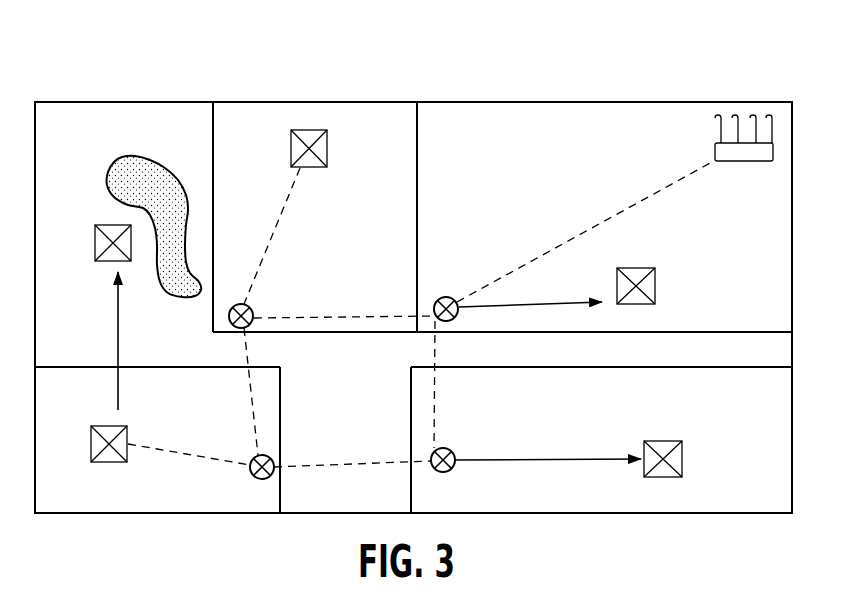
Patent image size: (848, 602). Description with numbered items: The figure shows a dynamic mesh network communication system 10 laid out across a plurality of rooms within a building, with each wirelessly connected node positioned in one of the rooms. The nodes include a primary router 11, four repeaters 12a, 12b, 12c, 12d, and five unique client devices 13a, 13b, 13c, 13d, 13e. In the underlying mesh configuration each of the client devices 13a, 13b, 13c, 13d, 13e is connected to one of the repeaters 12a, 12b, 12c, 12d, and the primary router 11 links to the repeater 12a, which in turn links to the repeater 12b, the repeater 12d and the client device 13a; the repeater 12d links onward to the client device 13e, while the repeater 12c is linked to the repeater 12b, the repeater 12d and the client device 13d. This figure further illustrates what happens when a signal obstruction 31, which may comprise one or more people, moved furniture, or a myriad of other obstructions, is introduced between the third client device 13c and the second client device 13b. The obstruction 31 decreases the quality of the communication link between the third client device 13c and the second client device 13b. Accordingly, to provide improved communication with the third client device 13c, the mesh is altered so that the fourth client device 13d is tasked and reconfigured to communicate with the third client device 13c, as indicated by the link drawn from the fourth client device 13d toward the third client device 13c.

The building / environment floor plan 10 is at (487, 101).
The primary router 11 is at (735, 162).
The repeater 12a is at (441, 297).
The repeater 12b is at (254, 308).
The repeater 12c is at (251, 460).
The repeater 12d is at (454, 450).
The client device 13a is at (636, 268).
The second client device 13b is at (328, 147).
The third client device 13c is at (105, 223).
The fourth client device 13d is at (110, 426).
The client device 13e is at (657, 441).
The signal obstruction 31 is at (173, 172).